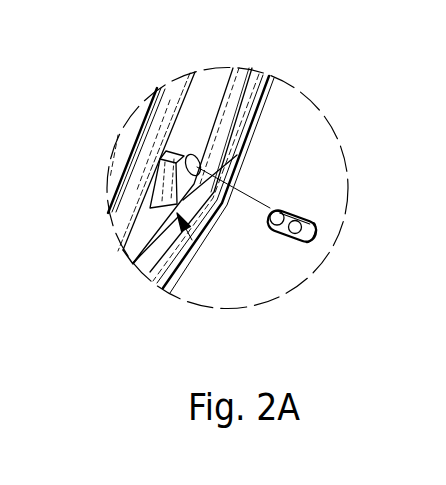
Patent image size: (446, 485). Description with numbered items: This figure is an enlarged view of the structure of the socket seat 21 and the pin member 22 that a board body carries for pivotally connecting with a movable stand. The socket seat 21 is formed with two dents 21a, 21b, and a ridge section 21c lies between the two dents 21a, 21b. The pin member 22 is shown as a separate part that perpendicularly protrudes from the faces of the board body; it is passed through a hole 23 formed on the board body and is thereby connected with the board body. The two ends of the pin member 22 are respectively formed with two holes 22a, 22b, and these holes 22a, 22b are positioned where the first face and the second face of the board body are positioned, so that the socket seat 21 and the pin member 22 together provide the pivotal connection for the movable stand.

The socket seat 21 is at (173, 290).
The dent 21a is at (147, 112).
The dent 21b is at (127, 220).
The ridge section 21c is at (150, 205).
The pin member 22 is at (331, 242).
The hole 22a is at (294, 236).
The hole 22b is at (268, 222).
The hole 23 is at (201, 161).